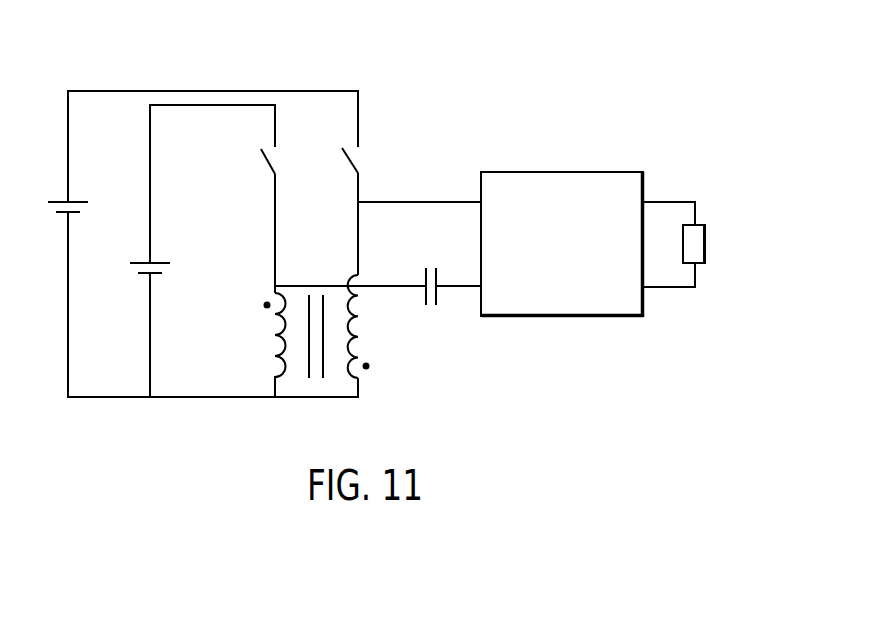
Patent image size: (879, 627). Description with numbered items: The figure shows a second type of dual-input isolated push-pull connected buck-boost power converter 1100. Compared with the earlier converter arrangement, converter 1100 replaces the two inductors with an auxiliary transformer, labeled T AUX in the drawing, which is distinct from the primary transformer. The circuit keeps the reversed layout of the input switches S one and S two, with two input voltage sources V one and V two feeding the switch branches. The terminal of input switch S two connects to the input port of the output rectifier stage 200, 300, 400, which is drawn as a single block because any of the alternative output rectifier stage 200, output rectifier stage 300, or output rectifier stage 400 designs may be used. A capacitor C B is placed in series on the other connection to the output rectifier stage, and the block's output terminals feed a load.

The dual-input isolated push-pull connected buck-boost power converter 1100 is at (405, 198).
The output rectifier stage 200 is at (621, 216).
The output rectifier stage 300 is at (621, 216).
The output rectifier stage 400 is at (635, 144).